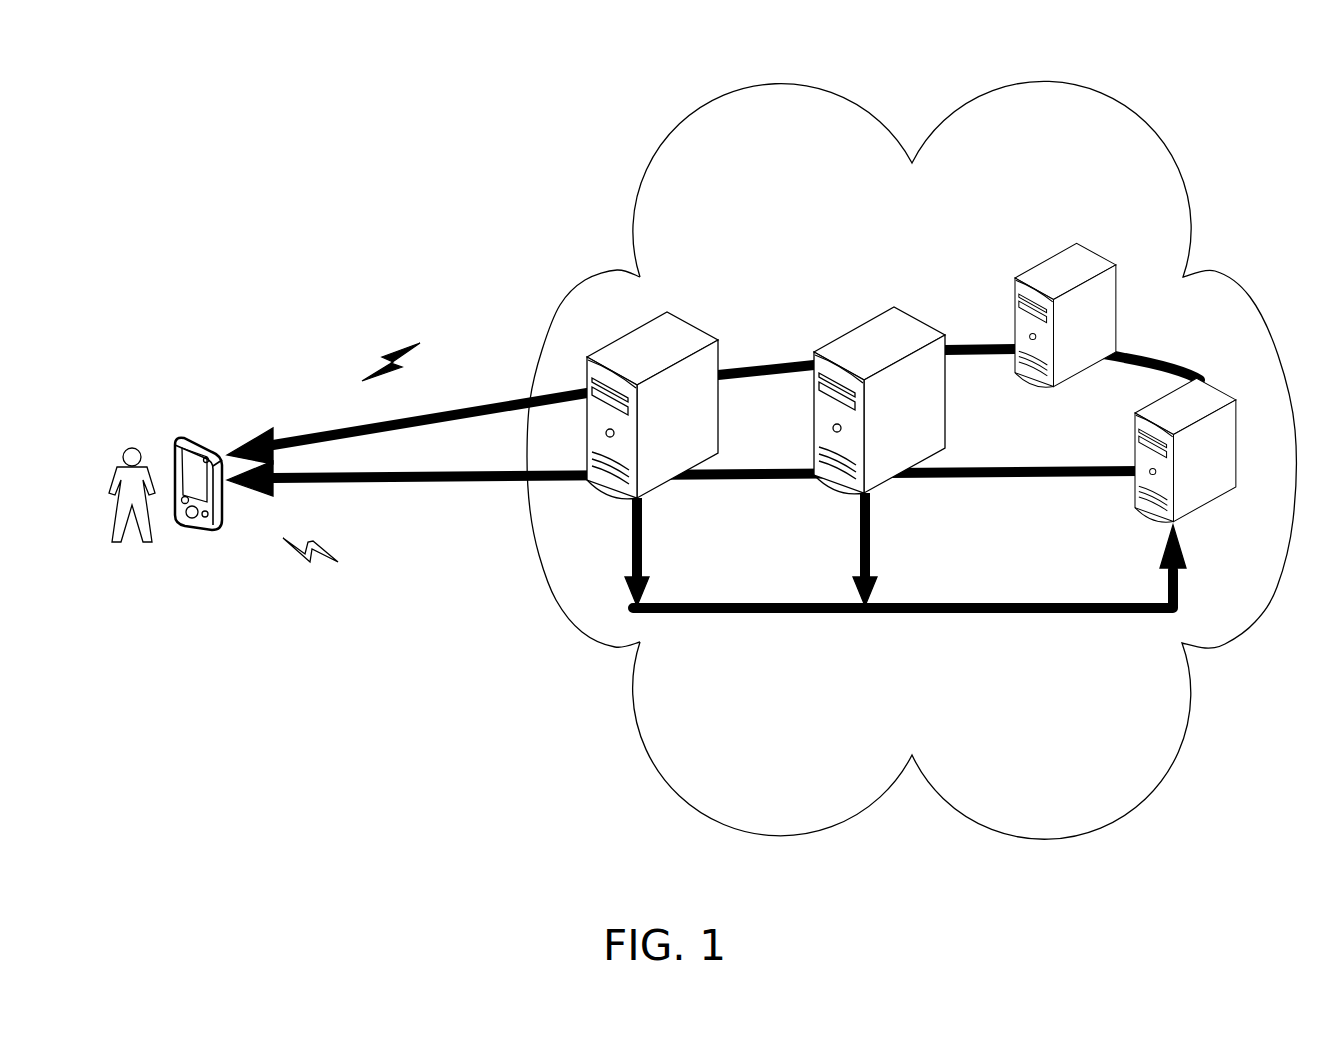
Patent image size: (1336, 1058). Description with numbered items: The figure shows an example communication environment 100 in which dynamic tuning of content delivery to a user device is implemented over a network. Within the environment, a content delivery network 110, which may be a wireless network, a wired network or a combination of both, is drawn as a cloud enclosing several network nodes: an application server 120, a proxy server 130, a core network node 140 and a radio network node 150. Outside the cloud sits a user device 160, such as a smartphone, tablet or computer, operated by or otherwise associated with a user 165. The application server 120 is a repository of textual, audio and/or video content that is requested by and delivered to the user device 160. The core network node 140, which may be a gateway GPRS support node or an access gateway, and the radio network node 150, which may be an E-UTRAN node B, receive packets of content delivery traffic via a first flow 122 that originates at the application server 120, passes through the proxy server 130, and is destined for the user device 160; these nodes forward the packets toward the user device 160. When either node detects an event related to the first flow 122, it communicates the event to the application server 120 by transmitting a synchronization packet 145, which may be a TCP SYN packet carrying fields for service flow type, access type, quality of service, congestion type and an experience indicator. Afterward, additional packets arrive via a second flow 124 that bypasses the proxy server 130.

The communication environment 100 is at (246, 98).
The content delivery network 110 is at (1020, 83).
The application server 120 is at (1222, 472).
The first flow 122 is at (763, 355).
The second flow 124 is at (421, 495).
The proxy server 130 is at (1099, 330).
The core network node 140 is at (919, 425).
The synchronization packet 145 is at (786, 628).
The radio network node 150 is at (692, 427).
The user device 160 is at (218, 410).
The user 165 is at (155, 600).